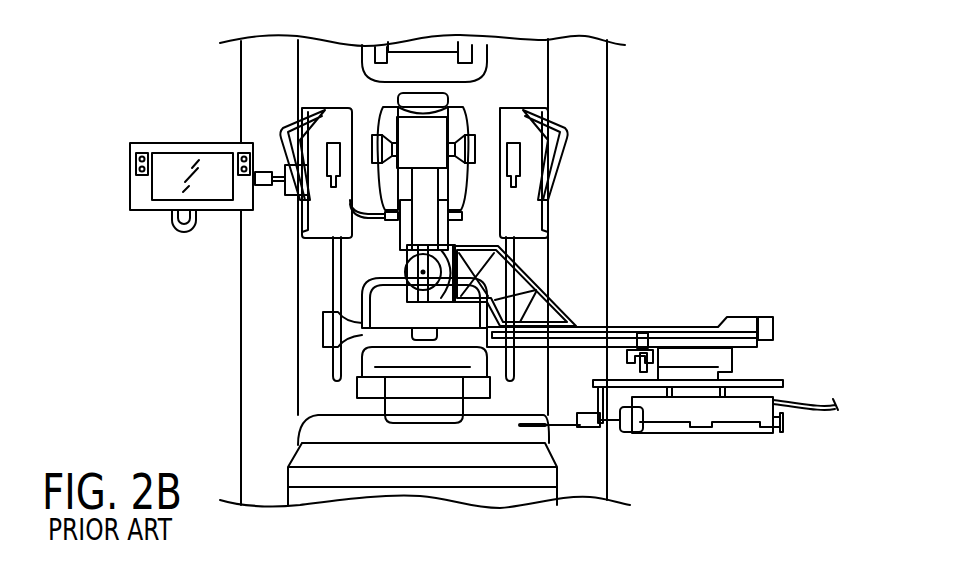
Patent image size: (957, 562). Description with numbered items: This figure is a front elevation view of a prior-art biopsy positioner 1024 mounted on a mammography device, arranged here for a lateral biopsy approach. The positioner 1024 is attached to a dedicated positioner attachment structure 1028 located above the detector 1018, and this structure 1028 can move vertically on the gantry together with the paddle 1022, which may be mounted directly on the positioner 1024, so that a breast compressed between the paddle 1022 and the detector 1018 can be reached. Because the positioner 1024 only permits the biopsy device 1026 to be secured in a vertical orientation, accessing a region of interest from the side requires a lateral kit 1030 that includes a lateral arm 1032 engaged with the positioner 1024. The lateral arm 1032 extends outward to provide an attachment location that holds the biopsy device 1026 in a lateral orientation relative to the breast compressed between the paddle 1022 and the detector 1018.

The detector 1018 is at (347, 473).
The paddle 1022 is at (365, 387).
The biopsy positioner 1024 is at (452, 190).
The biopsy device 1026 is at (700, 415).
The positioner attachment structure 1028 is at (403, 253).
The lateral kit 1030 is at (553, 268).
The lateral arm 1032 is at (630, 317).